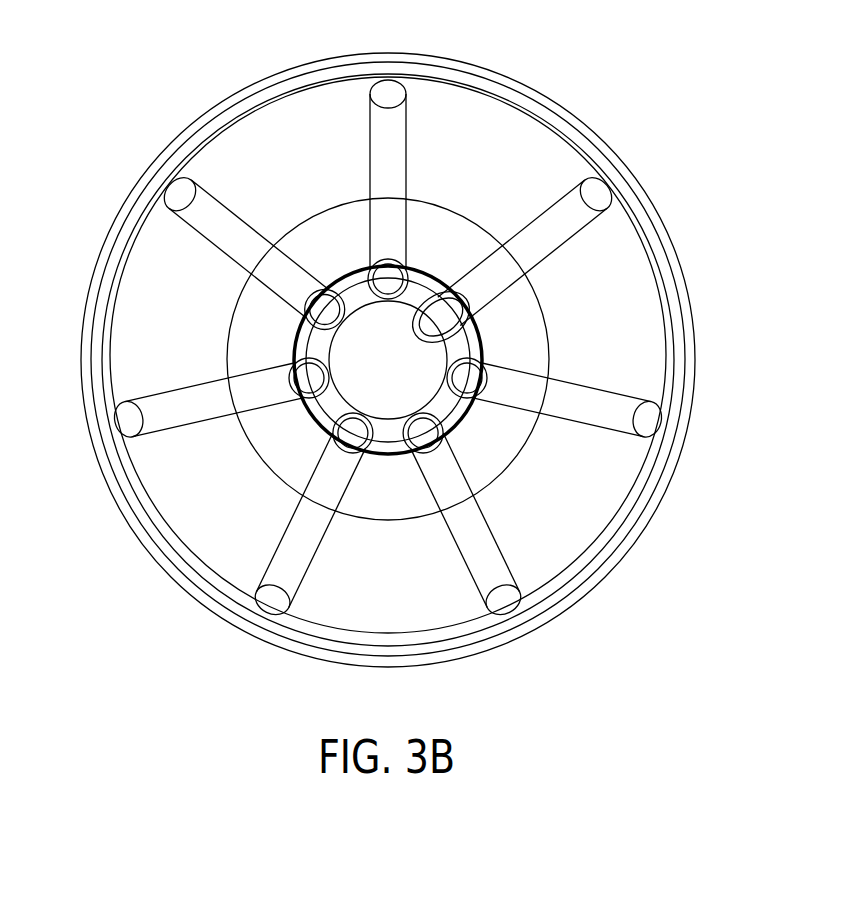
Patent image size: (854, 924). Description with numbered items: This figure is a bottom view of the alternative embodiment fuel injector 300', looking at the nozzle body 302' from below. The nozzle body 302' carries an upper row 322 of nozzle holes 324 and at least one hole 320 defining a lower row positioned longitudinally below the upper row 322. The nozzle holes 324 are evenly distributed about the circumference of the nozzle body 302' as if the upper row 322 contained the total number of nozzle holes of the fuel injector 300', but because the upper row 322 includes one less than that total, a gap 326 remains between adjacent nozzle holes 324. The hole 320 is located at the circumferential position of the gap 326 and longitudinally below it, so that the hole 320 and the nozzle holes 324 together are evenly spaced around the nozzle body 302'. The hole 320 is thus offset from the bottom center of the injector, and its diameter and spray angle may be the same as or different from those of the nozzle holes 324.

The fuel injector 300' is at (398, 384).
The nozzle body 302' is at (373, 360).
The hole 320 is at (443, 320).
The upper row 322 is at (245, 652).
The nozzle holes 324 is at (312, 382).
The gap 326 is at (433, 270).